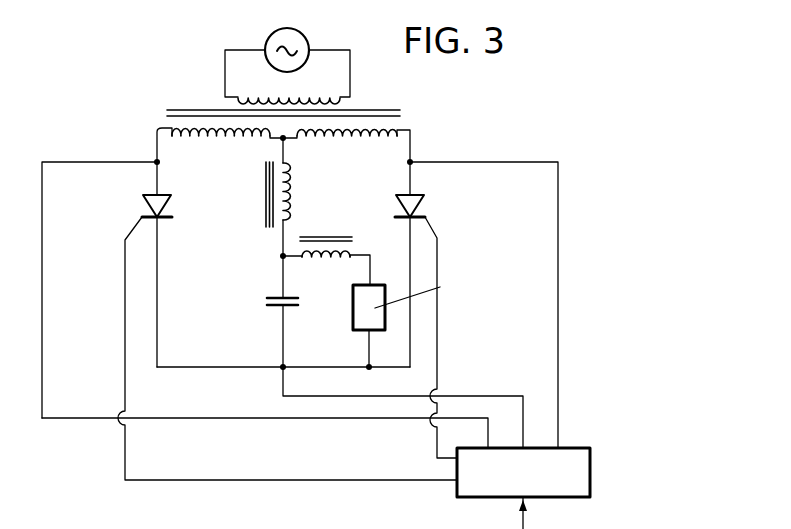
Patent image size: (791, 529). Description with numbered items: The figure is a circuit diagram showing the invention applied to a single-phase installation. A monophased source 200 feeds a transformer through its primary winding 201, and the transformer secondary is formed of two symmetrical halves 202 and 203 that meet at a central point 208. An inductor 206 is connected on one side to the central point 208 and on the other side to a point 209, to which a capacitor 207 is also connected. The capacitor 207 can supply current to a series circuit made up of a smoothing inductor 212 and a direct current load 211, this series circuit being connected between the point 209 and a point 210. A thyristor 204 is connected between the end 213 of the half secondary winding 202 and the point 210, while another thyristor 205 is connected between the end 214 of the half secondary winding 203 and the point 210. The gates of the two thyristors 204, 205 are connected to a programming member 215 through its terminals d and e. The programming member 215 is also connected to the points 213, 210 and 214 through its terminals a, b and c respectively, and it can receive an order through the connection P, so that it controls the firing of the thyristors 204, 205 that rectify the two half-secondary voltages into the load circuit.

The monophased source 200 is at (298, 36).
The primary winding 201 is at (262, 98).
The half secondary winding 202 is at (225, 138).
The half secondary winding 203 is at (340, 138).
The thyristor 204 is at (143, 210).
The thyristor 205 is at (425, 206).
The inductor 206 is at (292, 185).
The capacitor 207 is at (268, 299).
The central point 208 is at (280, 141).
The point 209 is at (280, 258).
The point 210 is at (280, 370).
The direct current load 211 is at (353, 312).
The smoothing inductor 212 is at (312, 260).
The end of half secondary winding 213 is at (157, 161).
The end of half secondary winding 214 is at (411, 161).
The programming member 215 is at (561, 455).